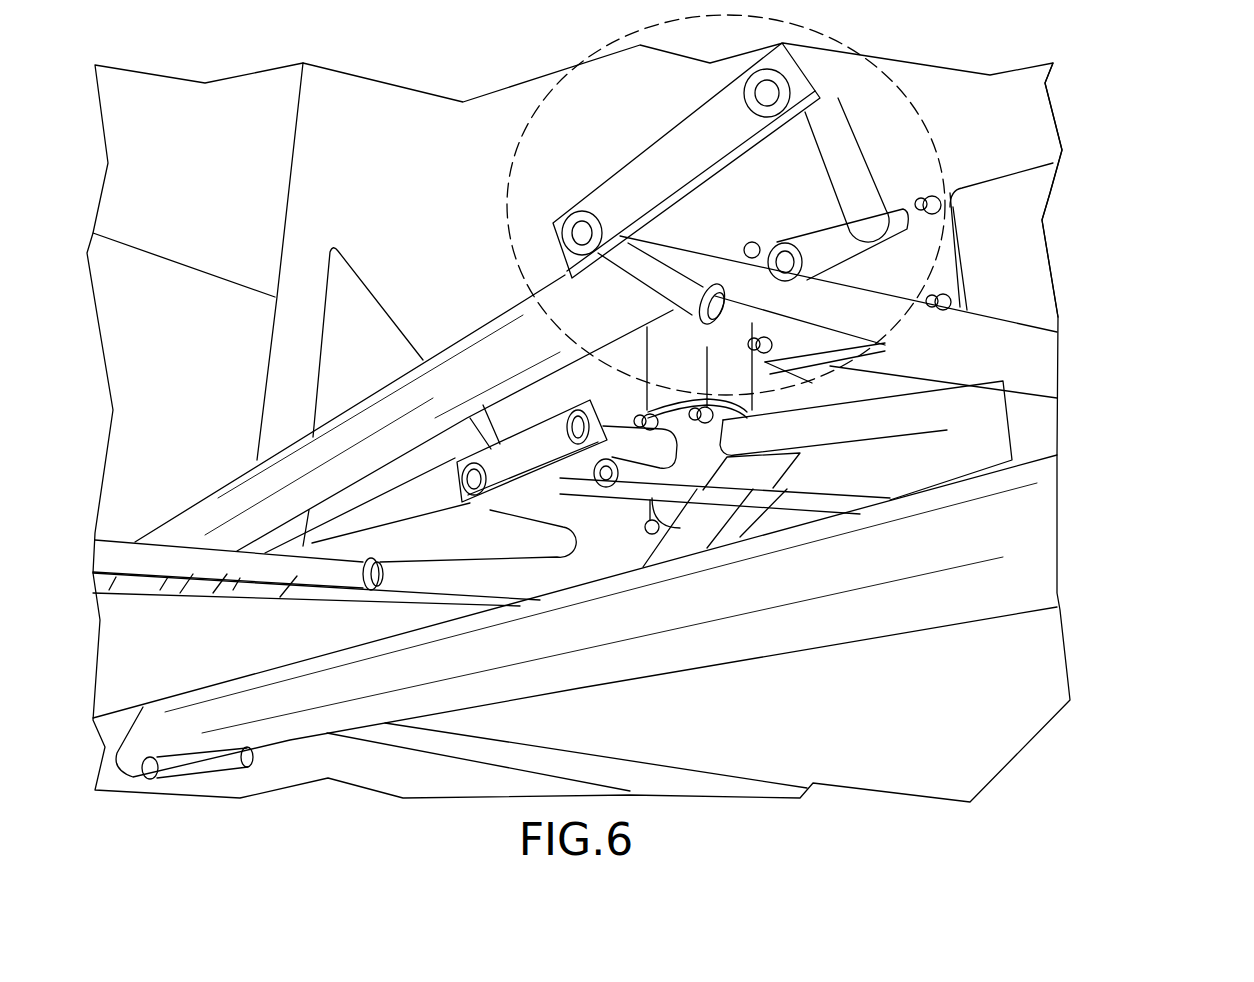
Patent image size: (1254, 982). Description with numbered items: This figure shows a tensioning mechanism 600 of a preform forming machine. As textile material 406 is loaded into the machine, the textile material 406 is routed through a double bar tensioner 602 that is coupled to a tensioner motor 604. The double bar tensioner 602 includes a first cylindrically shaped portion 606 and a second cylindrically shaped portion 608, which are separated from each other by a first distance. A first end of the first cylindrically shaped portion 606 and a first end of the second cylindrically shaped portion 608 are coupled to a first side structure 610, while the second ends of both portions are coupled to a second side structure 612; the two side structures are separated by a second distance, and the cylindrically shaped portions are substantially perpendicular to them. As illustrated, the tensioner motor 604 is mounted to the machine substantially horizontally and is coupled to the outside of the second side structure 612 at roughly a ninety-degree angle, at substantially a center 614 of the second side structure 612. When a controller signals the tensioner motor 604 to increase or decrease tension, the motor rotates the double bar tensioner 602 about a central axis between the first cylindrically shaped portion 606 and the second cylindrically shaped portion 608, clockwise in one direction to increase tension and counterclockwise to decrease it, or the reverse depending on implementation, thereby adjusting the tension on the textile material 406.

The tensioning mechanism 600 is at (1125, 158).
The double bar tensioner 602 is at (507, 183).
The tensioner motor 604 is at (1003, 203).
The first cylindrically shaped portion 606 is at (847, 183).
The second cylindrically shaped portion 608 is at (693, 310).
The first side structure 610 is at (637, 163).
The second side structure 612 is at (880, 187).
The center of the second side structure 614 is at (773, 250).
The textile material 406 is at (193, 518).